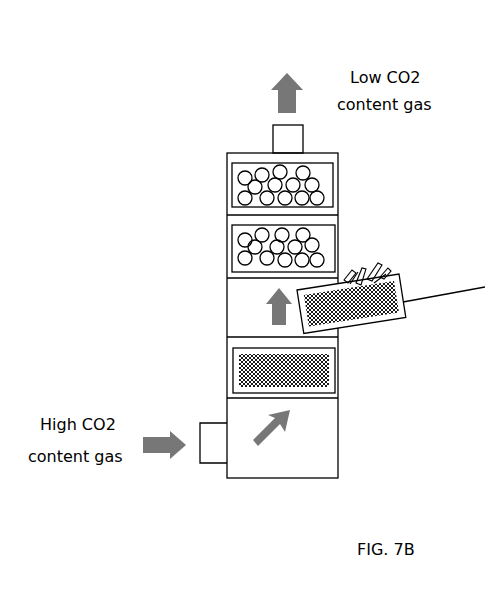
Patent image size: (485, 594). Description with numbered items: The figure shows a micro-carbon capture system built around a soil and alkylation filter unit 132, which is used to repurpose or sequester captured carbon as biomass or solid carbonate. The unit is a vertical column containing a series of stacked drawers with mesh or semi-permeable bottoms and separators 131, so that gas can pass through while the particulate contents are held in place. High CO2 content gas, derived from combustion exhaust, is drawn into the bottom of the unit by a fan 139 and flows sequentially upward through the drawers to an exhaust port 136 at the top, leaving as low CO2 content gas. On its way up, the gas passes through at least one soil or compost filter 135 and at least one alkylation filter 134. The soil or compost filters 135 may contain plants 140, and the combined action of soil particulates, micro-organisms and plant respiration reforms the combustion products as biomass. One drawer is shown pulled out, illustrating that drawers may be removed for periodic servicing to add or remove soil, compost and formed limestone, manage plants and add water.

The separators 131 is at (227, 218).
The soil and alkylation filter unit 132 is at (227, 300).
The alkylation filter 134 is at (338, 192).
The soil or compost filter 135 is at (327, 370).
The exhaust port 136 is at (275, 141).
The fan 139 is at (217, 423).
The plants 140 is at (398, 268).